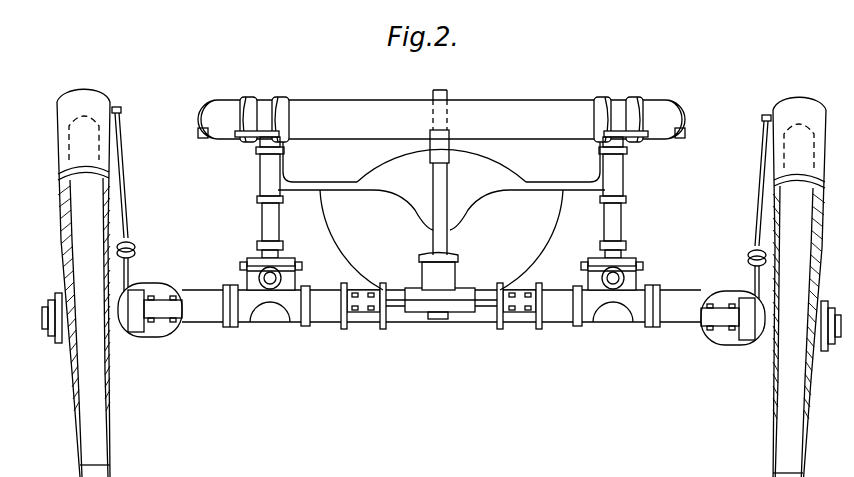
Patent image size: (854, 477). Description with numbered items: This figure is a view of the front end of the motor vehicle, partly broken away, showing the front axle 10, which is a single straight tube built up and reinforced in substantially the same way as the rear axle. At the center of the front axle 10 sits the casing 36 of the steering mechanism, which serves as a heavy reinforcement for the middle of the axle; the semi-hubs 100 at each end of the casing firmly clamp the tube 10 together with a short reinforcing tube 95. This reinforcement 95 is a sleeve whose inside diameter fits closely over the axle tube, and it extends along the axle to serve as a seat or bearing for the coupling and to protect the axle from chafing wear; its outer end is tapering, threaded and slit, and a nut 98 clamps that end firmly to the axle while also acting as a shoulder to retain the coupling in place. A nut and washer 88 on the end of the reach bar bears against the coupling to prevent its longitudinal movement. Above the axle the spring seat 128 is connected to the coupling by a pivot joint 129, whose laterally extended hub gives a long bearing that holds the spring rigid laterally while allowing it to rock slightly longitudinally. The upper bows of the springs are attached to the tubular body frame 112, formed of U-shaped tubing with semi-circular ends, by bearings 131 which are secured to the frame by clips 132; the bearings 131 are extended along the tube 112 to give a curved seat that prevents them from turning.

The front axle 10 is at (200, 297).
The casing of the steering mechanism 36 is at (426, 292).
The nut and washer 88 is at (247, 266).
The reinforcing tube 95 is at (334, 312).
The nut 98 is at (236, 327).
The semi-hubs 100 is at (368, 287).
The tubular body frame 112 is at (441, 119).
The spring seat 128 is at (283, 252).
The pivot joint 129 is at (292, 270).
The bearings 131 is at (258, 141).
The clips 132 is at (291, 88).